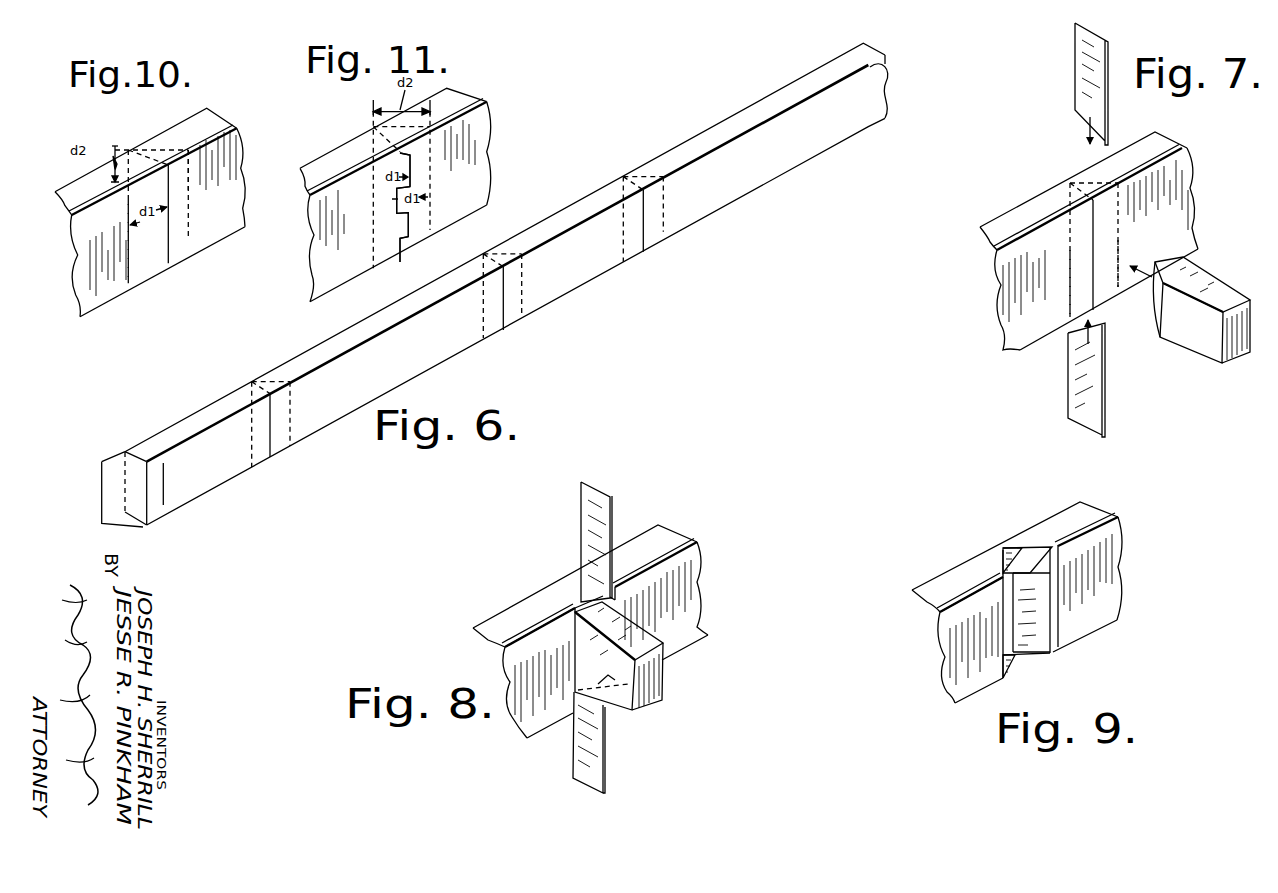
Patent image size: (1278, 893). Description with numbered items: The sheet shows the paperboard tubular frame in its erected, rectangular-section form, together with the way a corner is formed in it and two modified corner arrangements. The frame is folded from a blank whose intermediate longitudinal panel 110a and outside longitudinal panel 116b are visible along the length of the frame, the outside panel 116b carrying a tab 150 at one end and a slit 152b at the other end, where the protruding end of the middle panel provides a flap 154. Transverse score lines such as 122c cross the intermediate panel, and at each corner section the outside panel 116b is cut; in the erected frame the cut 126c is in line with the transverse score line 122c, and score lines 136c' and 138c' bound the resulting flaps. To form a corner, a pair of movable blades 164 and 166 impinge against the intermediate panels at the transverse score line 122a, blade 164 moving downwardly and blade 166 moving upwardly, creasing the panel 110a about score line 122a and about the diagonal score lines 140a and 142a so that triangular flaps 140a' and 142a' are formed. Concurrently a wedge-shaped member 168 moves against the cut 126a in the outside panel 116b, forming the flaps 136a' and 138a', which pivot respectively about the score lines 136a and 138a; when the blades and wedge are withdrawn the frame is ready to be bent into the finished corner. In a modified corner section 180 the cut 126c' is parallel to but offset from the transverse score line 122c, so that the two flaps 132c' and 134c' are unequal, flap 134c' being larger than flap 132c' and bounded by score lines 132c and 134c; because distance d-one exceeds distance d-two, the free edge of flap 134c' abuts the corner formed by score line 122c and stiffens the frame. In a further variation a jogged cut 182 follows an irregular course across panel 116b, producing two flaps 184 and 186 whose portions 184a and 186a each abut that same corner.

In FIG. 6, the intermediate longitudinal panel 110a is at (733, 120).
In FIG. 10, the intermediate longitudinal panel 110a is at (80, 185).
In FIG. 11, the intermediate longitudinal panel 110a is at (455, 103).
In FIG. 7, the intermediate longitudinal panel 110a is at (1150, 147).
In FIG. 9, the intermediate longitudinal panel 110a is at (1084, 510).
In FIG. 6, the outside longitudinal panel 116b is at (587, 268).
In FIG. 10, the outside longitudinal panel 116b is at (223, 160).
In FIG. 11, the outside longitudinal panel 116b is at (480, 150).
In FIG. 7, the outside longitudinal panel 116b is at (1193, 214).
In FIG. 8, the outside longitudinal panel 116b is at (688, 600).
In FIG. 9, the outside longitudinal panel 116b is at (1113, 556).
In FIG. 7, the transverse score line 122a is at (1068, 190).
In FIG. 9, the transverse score line 122a is at (1012, 547).
In FIG. 6, the transverse score line 122c is at (257, 382).
In FIG. 10, the transverse score line 122c is at (148, 148).
In FIG. 11, the transverse score line 122c is at (375, 125).
In FIG. 7, the cut 126a is at (1105, 227).
In FIG. 6, the cut 126c is at (292, 442).
In FIG. 10, the offset cut 126c' is at (177, 239).
In FIG. 10, the score line 132c is at (220, 213).
In FIG. 11, the score line 132c is at (456, 171).
In FIG. 10, the flap 132c' is at (195, 138).
In FIG. 10, the score line 134c is at (85, 218).
In FIG. 11, the score line 134c is at (353, 190).
In FIG. 10, the flap 134c' is at (117, 276).
In FIG. 7, the score line 136a is at (1182, 216).
In FIG. 9, the score line 136a is at (1065, 612).
In FIG. 7, the flap 136a' is at (1140, 259).
In FIG. 6, the score line 136c' is at (323, 413).
In FIG. 7, the score line 138a is at (1003, 252).
In FIG. 7, the flap 138a' is at (1019, 300).
In FIG. 6, the score line 138c' is at (223, 424).
In FIG. 8, the diagonal score line 140a is at (585, 571).
In FIG. 8, the triangular flap 140a' is at (686, 570).
In FIG. 9, the triangular flap 140a' is at (1035, 568).
In FIG. 8, the diagonal score line 142a is at (540, 607).
In FIG. 8, the triangular flap 142a' is at (559, 572).
In FIG. 9, the triangular flap 142a' is at (965, 567).
In FIG. 6, the tab 150 is at (885, 84).
In FIG. 6, the slit 152b is at (166, 486).
In FIG. 6, the flap 154 is at (106, 467).
In FIG. 7, the movable blade 164 is at (1075, 78).
In FIG. 8, the movable blade 164 is at (595, 500).
In FIG. 7, the movable blade 166 is at (1088, 400).
In FIG. 8, the movable blade 166 is at (596, 757).
In FIG. 7, the wedge-shaped member 168 is at (1212, 290).
In FIG. 8, the wedge-shaped member 168 is at (650, 685).
In FIG. 10, the corner section 180 is at (192, 272).
In FIG. 11, the jogged cut 182 is at (394, 198).
In FIG. 11, the flap 184 is at (387, 265).
In FIG. 11, the flap portion 184a is at (401, 245).
In FIG. 11, the flap 186 is at (422, 221).
In FIG. 11, the flap portion 186a is at (407, 177).